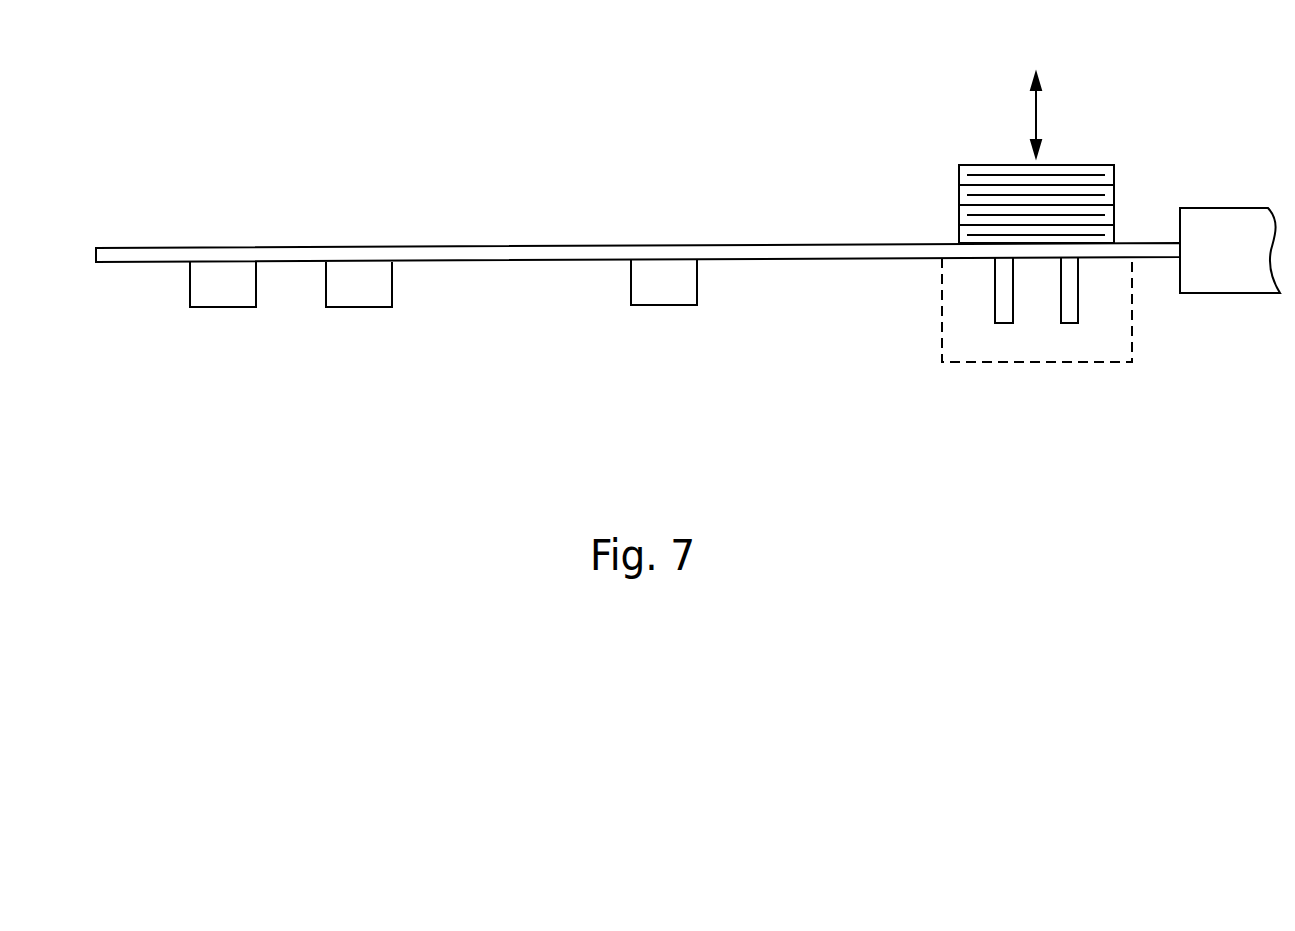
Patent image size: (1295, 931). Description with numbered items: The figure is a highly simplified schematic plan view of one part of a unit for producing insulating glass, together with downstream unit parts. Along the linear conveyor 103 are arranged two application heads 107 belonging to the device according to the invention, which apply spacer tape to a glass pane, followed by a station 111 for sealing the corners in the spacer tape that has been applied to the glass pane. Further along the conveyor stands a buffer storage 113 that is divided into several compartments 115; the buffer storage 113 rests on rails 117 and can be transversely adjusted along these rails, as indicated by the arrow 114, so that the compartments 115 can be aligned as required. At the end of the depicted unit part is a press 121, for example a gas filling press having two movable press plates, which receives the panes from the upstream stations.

The linear conveyor 103 is at (147, 259).
The application head 107 is at (208, 322).
The station for sealing the corners 111 is at (638, 321).
The buffer storage 113 is at (975, 147).
The arrow 114 is at (1037, 115).
The compartments 115 is at (975, 182).
The rails 117 is at (1072, 310).
The press 121 is at (1213, 247).